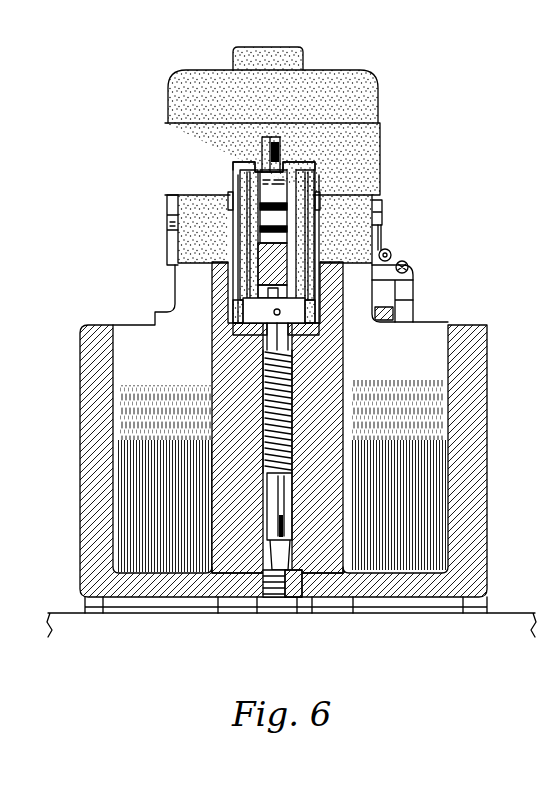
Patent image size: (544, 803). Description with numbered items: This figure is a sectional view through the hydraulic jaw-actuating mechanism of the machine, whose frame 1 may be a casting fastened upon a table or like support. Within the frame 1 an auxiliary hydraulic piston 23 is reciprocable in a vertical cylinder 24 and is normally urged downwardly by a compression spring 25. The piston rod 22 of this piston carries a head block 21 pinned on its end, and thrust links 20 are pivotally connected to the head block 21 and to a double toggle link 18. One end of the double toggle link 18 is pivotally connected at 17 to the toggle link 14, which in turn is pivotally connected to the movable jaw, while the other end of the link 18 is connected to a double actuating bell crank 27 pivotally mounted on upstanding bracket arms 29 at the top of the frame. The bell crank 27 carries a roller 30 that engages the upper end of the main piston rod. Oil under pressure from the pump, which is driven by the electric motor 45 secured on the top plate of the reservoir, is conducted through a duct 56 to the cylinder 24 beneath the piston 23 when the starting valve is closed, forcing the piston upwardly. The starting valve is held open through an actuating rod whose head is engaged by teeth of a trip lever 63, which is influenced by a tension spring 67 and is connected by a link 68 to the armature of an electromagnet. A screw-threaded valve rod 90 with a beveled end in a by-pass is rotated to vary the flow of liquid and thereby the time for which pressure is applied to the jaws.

The frame 1 is at (80, 579).
The toggle link 14 is at (290, 257).
The pivotal connection 17 is at (246, 266).
The double toggle link 18 is at (250, 240).
The thrust links 20 is at (237, 308).
The head block 21 is at (257, 328).
The piston rod 22 is at (214, 368).
The auxiliary hydraulic piston 23 is at (233, 558).
The vertical cylinder 24 is at (265, 410).
The compression spring 25 is at (290, 390).
The double actuating bell crank 27 is at (243, 168).
The upstanding bracket arms 29 is at (176, 196).
The roller 30 is at (258, 165).
The electric motor 45 is at (177, 172).
The duct 56 is at (288, 605).
The trip lever 63 is at (396, 265).
The tension spring 67 is at (381, 244).
The link 68 is at (413, 302).
The valve rod 90 is at (278, 140).